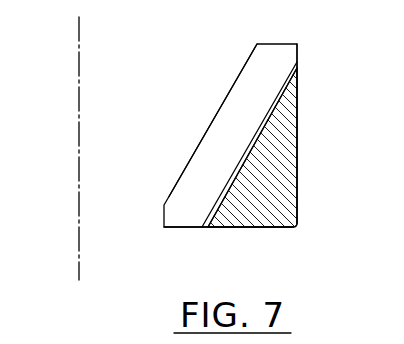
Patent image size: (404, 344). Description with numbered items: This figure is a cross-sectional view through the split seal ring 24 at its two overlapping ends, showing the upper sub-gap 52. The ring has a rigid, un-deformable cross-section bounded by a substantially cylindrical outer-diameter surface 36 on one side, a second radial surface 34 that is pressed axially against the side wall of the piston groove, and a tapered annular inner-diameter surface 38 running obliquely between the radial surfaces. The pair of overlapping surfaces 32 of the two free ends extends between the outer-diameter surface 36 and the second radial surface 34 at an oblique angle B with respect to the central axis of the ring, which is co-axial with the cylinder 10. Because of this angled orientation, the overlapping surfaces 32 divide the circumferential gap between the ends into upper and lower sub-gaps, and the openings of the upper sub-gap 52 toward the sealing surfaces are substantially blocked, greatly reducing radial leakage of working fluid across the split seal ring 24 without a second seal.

The cylinder 10 is at (79, 43).
The split seal ring 24 is at (270, 221).
The overlapping surfaces 32 is at (292, 71).
The second radial surface 34 is at (193, 228).
The outer-diameter surface 36 is at (298, 155).
The tapered annular inner-diameter surface 38 is at (232, 82).
The upper sub-gap 52 is at (230, 123).
The oblique angle B is at (79, 138).